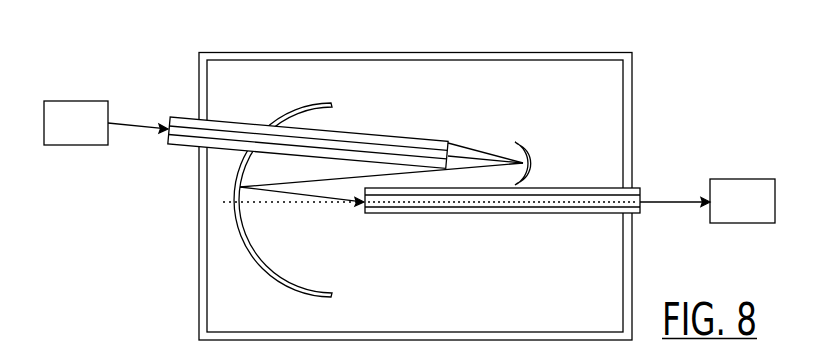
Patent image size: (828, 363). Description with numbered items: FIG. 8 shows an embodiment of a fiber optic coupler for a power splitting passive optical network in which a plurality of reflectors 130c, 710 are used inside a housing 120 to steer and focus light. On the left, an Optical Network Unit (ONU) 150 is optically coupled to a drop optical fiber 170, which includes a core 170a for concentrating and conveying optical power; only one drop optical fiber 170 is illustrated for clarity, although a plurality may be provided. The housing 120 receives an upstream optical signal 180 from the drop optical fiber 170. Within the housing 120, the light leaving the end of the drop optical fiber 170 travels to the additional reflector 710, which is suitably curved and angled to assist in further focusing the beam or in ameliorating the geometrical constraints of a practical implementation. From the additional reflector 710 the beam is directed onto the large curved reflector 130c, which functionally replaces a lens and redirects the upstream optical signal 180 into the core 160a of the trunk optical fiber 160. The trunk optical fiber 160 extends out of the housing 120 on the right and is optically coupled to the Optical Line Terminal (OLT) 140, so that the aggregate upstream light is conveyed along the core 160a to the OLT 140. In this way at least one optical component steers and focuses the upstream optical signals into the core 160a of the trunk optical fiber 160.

The housing 120 is at (463, 52).
The reflector 130c is at (313, 293).
The Optical Line Terminal (OLT) 140 is at (775, 200).
The Optical Network Unit (ONU) 150 is at (72, 101).
The trunk optical fiber 160 is at (502, 202).
The core 160a is at (507, 213).
The drop optical fiber 170 is at (345, 123).
The core 170a is at (361, 134).
The upstream optical signal 180 is at (267, 190).
The additional reflector 710 is at (525, 148).